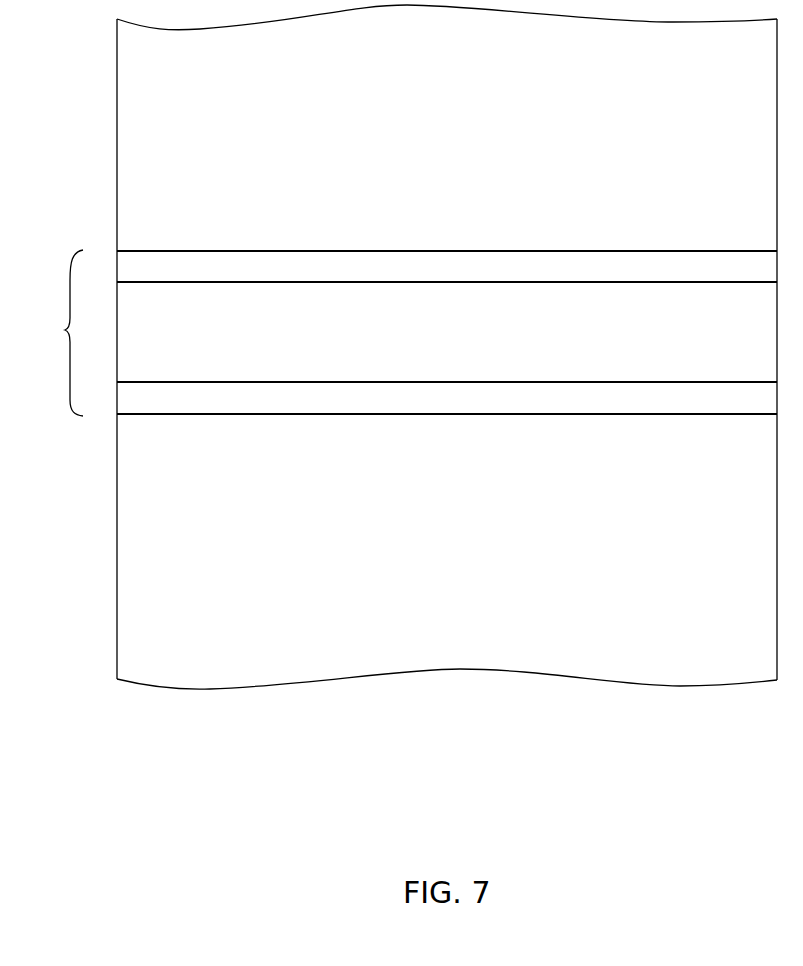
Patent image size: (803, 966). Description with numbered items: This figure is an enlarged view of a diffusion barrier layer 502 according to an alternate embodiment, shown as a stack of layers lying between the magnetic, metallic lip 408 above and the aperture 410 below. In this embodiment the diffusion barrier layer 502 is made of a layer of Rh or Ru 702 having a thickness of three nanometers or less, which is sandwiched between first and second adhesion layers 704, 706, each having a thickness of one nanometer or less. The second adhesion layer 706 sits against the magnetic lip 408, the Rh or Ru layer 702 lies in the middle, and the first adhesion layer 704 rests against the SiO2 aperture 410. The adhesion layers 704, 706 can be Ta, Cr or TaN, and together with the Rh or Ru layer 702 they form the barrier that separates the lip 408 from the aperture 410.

The magnetic metallic lip 408 is at (491, 132).
The diffusion barrier layer 502 is at (71, 275).
The second adhesion layer 706 is at (497, 267).
The layer of Rh or Ru 702 is at (505, 331).
The first adhesion layer 704 is at (505, 398).
The aperture 410 is at (504, 512).